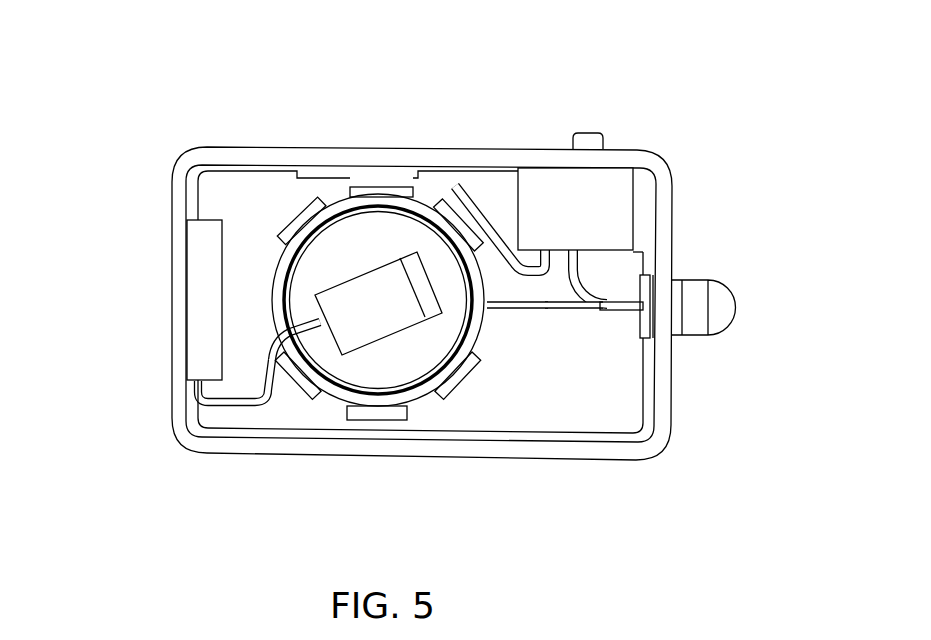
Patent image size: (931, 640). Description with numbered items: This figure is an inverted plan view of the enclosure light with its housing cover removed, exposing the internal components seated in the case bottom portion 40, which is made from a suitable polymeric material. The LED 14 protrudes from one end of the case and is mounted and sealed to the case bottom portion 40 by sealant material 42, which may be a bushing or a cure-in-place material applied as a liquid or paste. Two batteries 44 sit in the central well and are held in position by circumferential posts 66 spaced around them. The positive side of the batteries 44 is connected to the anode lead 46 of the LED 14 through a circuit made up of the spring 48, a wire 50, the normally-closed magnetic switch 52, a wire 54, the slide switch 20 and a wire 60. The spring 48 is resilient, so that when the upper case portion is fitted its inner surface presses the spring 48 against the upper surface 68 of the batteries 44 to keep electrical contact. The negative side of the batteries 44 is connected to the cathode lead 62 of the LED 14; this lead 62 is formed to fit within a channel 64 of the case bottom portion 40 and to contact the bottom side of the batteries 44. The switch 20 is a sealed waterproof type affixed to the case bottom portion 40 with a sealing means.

The LED 14 is at (723, 302).
The switch 20 is at (587, 202).
The case bottom portion 40 is at (663, 430).
The sealant material 42 is at (678, 280).
The batteries 44 is at (422, 368).
The anode lead 46 is at (625, 307).
The spring 48 is at (372, 295).
The wire 50 is at (263, 397).
The normally-closed magnetic switch 52 is at (207, 318).
The wire 54 is at (459, 190).
The wire 60 is at (578, 287).
The cathode lead 62 is at (558, 305).
The channel 64 is at (527, 307).
The circumferential posts 66 is at (303, 225).
The upper surface 68 is at (310, 273).